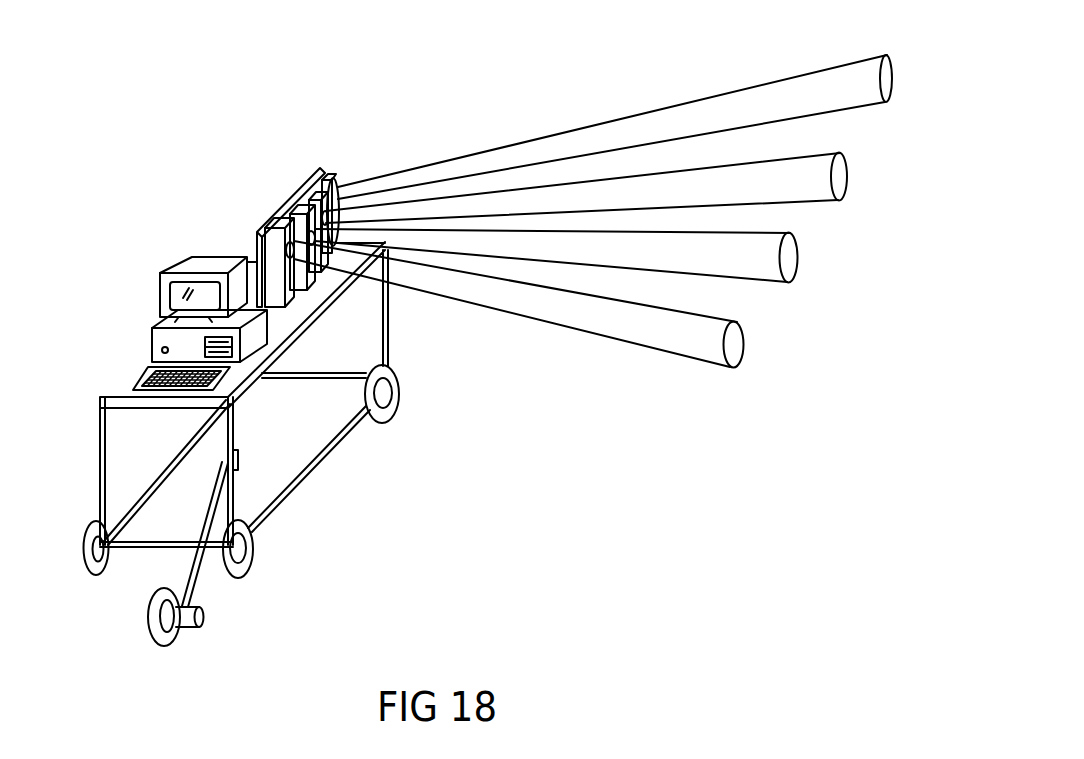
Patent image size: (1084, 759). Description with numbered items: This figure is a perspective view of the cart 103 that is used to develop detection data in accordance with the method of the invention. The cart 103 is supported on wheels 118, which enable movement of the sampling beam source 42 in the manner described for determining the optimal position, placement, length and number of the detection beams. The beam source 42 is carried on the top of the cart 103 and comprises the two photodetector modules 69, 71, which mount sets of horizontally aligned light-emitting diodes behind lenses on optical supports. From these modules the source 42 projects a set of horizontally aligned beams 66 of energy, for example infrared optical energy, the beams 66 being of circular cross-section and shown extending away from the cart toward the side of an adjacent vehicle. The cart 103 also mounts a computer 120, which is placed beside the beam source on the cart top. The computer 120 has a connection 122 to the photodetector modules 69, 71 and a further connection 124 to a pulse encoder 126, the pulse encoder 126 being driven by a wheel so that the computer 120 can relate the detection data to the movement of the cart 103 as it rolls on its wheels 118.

The sampling beam source 42 is at (302, 196).
The beams 66 is at (710, 108).
The photodetector module 69 is at (275, 212).
The photodetector module 71 is at (322, 165).
The cart 103 is at (76, 447).
The wheels 118 is at (399, 404).
The computer 120 is at (126, 284).
The connection 122 is at (252, 258).
The connection 124 is at (176, 588).
The pulse encoder 126 is at (174, 647).